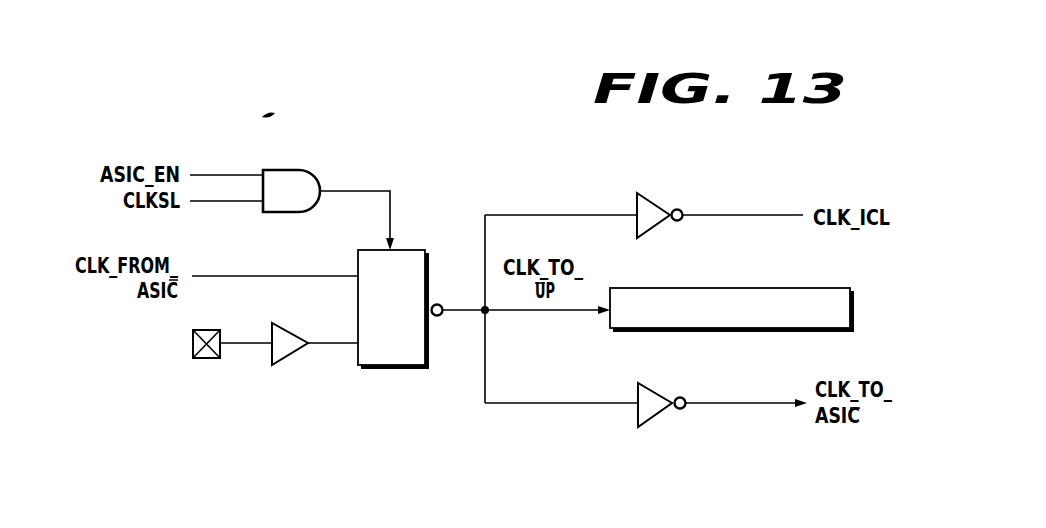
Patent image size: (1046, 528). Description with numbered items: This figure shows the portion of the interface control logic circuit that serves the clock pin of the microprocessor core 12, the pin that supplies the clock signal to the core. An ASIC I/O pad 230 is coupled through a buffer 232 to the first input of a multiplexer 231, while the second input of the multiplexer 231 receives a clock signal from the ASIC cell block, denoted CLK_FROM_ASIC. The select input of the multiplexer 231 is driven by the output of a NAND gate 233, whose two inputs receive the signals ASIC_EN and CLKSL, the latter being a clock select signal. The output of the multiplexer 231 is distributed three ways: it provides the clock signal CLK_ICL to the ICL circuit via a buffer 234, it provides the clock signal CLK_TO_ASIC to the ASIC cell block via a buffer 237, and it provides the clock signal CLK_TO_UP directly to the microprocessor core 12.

The microprocessor core 12 is at (742, 287).
The ASIC I/O pad 230 is at (207, 362).
The multiplexer 231 is at (413, 248).
The buffer 232 is at (290, 357).
The NAND gate 233 is at (317, 173).
The buffer 234 is at (633, 203).
The buffer 237 is at (657, 413).